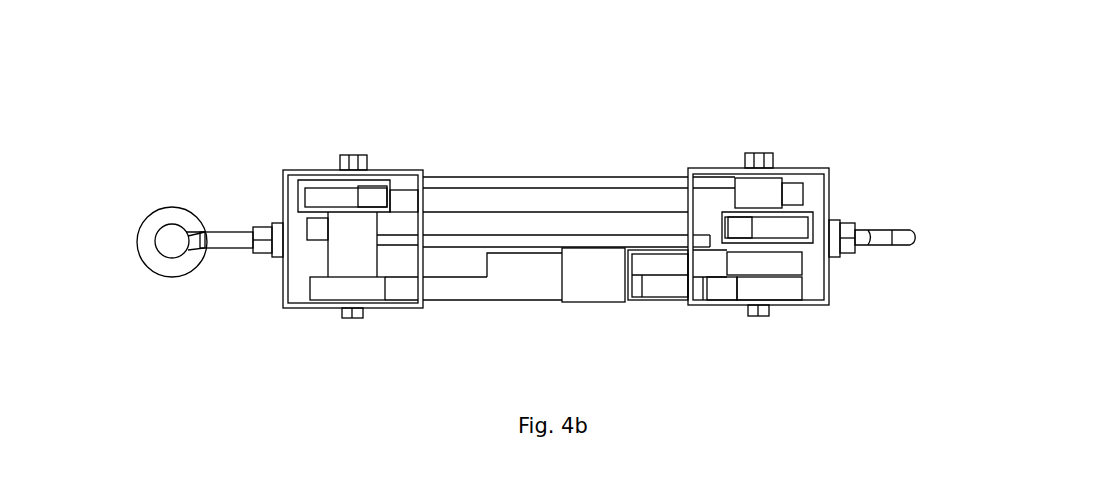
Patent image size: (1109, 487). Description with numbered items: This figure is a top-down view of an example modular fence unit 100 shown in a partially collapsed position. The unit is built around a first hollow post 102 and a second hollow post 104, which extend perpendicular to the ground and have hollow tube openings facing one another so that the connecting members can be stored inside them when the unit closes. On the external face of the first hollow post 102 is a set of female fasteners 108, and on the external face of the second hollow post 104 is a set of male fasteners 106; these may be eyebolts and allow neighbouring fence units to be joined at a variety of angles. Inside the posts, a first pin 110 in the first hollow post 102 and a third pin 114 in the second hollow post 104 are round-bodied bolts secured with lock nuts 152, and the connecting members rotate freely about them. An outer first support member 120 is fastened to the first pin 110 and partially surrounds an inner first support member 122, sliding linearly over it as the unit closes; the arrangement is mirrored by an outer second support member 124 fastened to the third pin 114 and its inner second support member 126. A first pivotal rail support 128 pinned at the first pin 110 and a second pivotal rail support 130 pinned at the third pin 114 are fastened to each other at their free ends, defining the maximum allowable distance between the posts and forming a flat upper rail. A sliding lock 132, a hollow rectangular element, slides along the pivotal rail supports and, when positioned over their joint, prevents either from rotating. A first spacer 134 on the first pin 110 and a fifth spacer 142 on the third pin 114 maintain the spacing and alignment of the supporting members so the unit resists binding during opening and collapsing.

The modular fence unit 100 is at (525, 210).
The first hollow post 102 is at (287, 175).
The second hollow post 104 is at (831, 180).
The set of male fasteners 106 is at (913, 238).
The set of female fasteners 108 is at (172, 218).
The first pin 110 is at (345, 320).
The third pin 114 is at (765, 317).
The outer first support member 120 is at (443, 197).
The inner first support member 122 is at (488, 183).
The outer second support member 124 is at (610, 240).
The inner second support member 126 is at (500, 227).
The first pivotal rail support 128 is at (455, 288).
The second pivotal rail support 130 is at (658, 268).
The sliding lock 132 is at (602, 287).
The first spacer 134 is at (345, 254).
The fifth spacer 142 is at (775, 288).
The lock nuts 152 is at (753, 157).